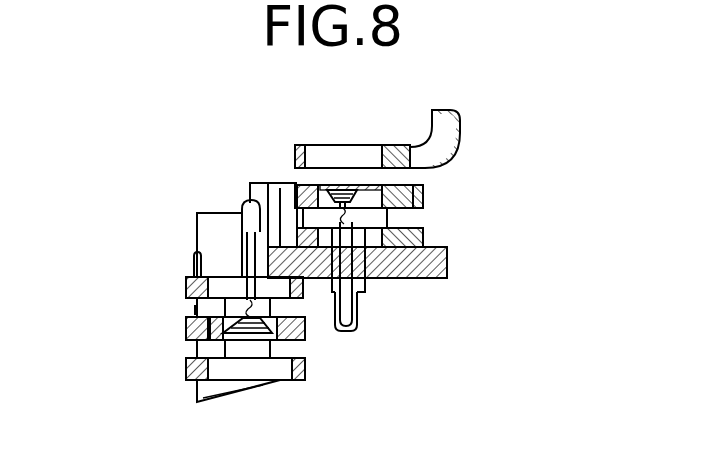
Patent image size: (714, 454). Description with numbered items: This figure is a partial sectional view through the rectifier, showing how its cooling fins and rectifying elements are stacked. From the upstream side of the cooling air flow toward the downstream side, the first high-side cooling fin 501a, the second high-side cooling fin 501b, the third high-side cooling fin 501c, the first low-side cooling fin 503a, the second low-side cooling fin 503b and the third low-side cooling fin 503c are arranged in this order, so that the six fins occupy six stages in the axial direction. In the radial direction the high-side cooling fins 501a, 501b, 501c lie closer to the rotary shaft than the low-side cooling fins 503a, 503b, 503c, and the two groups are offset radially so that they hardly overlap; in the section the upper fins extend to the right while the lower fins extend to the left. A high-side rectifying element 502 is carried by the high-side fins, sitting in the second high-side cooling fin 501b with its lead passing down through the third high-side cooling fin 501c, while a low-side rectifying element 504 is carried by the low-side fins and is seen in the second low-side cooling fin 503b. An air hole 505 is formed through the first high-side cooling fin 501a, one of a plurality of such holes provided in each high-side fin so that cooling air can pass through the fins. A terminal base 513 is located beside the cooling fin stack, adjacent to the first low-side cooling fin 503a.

The first high-side cooling fin 501a is at (458, 126).
The second high-side cooling fin 501b is at (425, 192).
The third high-side cooling fin 501c is at (425, 233).
The high-side rectifying element 502 is at (373, 182).
The first low-side cooling fin 503a is at (185, 295).
The second low-side cooling fin 503b is at (185, 337).
The third low-side cooling fin 503c is at (185, 375).
The low-side rectifying element 504 is at (280, 345).
The air hole 505 is at (423, 152).
The terminal base 513 is at (213, 229).